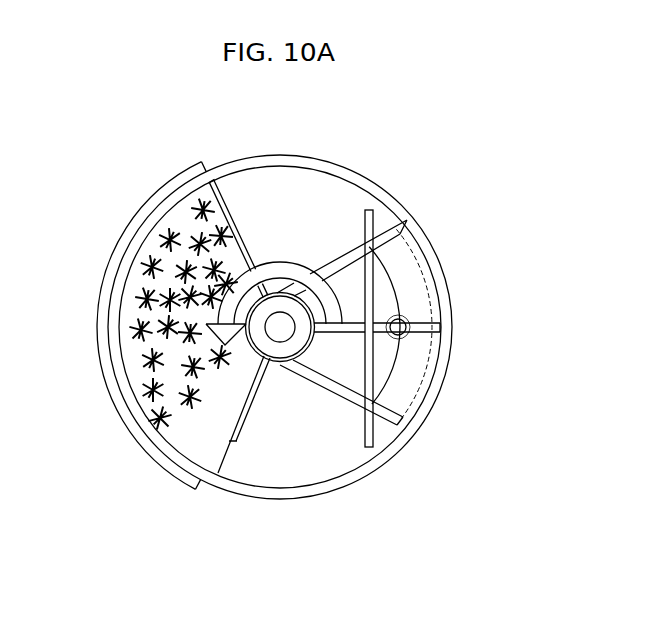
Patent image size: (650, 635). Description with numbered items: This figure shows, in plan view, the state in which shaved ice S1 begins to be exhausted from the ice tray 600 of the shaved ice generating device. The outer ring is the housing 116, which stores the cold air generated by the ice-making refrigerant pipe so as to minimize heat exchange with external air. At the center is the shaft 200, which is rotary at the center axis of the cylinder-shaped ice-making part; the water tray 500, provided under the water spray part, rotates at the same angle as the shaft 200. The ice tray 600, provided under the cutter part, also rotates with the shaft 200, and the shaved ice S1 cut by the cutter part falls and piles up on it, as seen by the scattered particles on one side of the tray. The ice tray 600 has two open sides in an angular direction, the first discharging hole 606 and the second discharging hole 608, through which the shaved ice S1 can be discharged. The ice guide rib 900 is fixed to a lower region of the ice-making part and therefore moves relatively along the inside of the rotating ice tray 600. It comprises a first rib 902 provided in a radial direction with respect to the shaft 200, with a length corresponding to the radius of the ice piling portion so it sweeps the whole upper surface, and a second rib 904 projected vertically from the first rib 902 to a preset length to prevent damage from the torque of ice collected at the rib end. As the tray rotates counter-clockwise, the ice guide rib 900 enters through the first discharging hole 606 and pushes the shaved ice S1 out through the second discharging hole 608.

The housing 116 is at (243, 156).
The second discharging hole 608 is at (280, 322).
The shaft 200 is at (197, 235).
The shaved ice S1 is at (136, 335).
The ice tray 600 is at (124, 425).
The first discharging hole 606 is at (237, 443).
The water tray 500 is at (353, 388).
The second rib 904 is at (410, 421).
The ice guide rib 900 is at (380, 334).
The first rib 902 is at (410, 318).